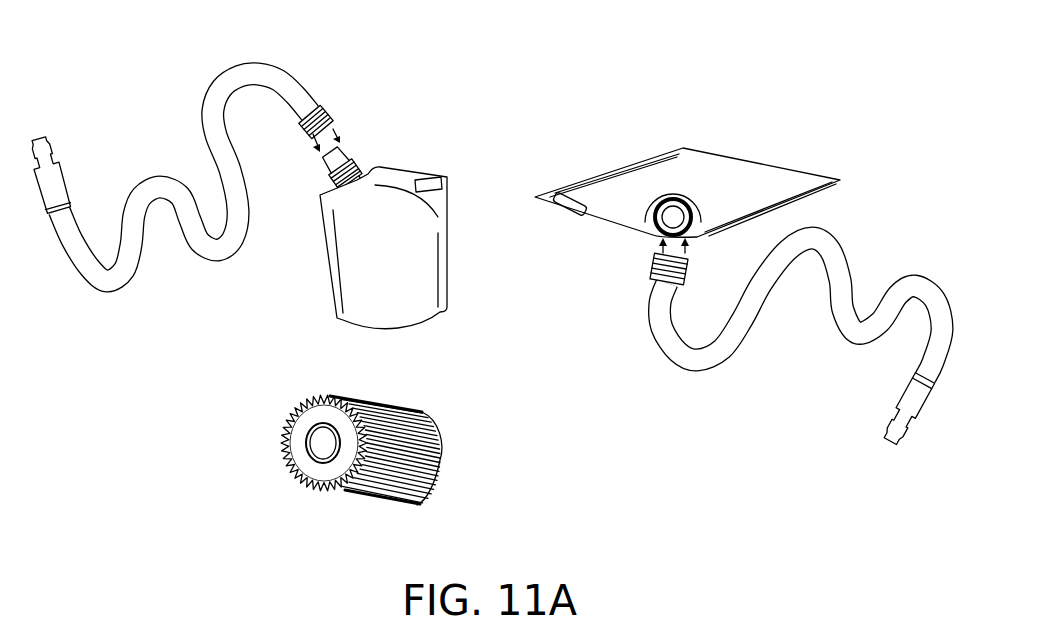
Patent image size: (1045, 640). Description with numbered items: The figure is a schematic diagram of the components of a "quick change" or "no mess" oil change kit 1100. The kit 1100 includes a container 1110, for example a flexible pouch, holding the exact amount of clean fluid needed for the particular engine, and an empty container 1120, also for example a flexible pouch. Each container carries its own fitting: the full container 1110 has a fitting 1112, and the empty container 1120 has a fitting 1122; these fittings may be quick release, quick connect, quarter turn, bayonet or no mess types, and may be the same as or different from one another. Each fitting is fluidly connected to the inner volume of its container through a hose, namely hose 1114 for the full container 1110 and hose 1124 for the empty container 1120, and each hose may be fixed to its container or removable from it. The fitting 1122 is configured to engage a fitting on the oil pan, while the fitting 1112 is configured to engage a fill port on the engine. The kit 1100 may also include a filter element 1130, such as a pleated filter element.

The quick change kit 1100 is at (163, 57).
The container 1110 is at (426, 145).
The fitting 1112 is at (63, 173).
The hose 1114 is at (233, 257).
The empty container 1120 is at (764, 135).
The fitting 1122 is at (883, 410).
The hose 1124 is at (810, 333).
The filter element 1130 is at (472, 457).